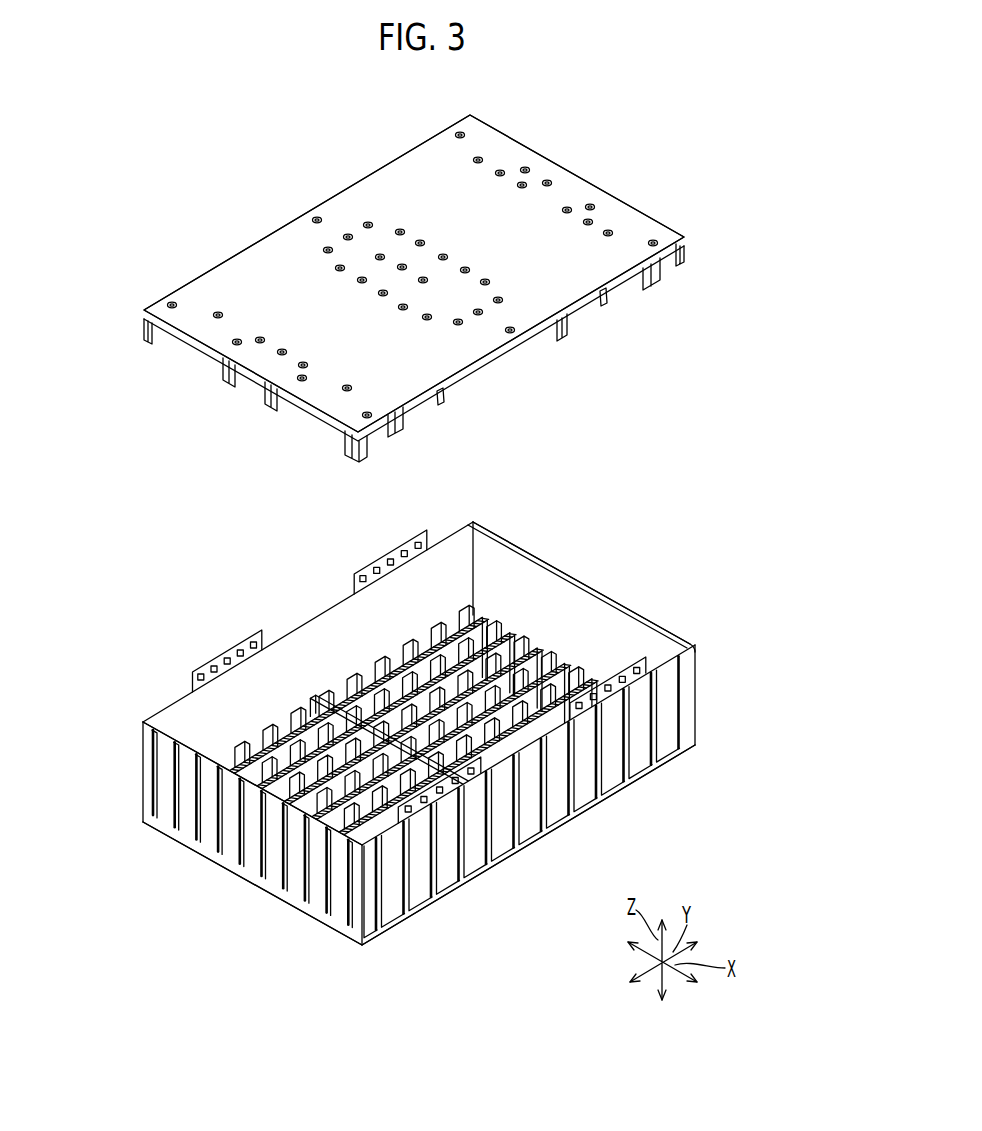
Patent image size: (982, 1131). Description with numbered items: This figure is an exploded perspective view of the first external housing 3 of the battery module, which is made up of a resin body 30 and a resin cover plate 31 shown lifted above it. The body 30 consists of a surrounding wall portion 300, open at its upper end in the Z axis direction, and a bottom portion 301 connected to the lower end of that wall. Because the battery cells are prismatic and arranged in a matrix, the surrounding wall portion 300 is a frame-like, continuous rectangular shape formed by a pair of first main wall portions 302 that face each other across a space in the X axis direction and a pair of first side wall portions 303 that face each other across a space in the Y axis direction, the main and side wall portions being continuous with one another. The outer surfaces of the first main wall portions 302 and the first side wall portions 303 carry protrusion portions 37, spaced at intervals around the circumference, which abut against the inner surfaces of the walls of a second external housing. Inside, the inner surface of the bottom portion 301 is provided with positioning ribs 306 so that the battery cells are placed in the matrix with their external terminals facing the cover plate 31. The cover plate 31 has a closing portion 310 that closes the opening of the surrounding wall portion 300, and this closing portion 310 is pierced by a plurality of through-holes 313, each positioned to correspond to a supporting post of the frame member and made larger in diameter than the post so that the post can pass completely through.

The first external housing 3 is at (786, 374).
The body 30 is at (696, 606).
The cover plate 31 is at (650, 323).
The protrusion portions 37 is at (217, 845).
The surrounding wall portion 300 is at (626, 597).
The bottom portion 301 is at (518, 633).
The first main wall portions 302 is at (337, 622).
The first side wall portions 303 is at (528, 578).
The positioning ribs 306 is at (470, 615).
The closing portion 310 is at (246, 277).
The through-holes 313 is at (522, 183).